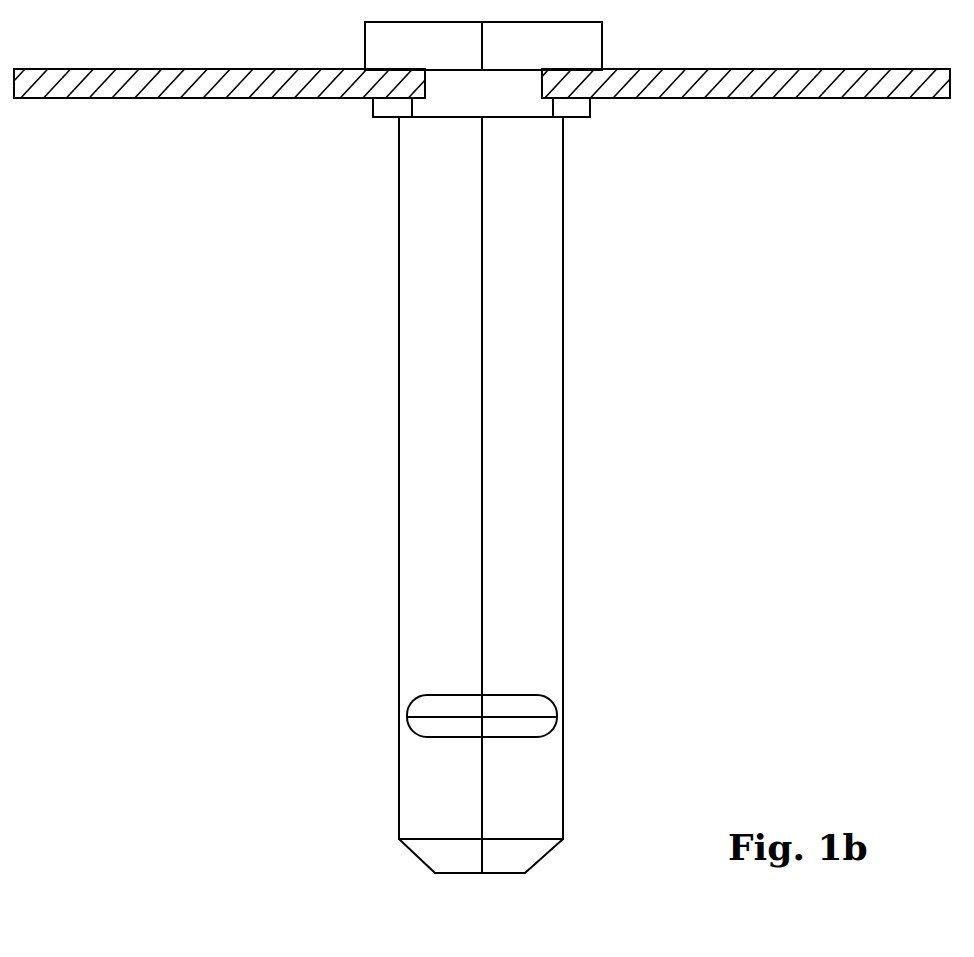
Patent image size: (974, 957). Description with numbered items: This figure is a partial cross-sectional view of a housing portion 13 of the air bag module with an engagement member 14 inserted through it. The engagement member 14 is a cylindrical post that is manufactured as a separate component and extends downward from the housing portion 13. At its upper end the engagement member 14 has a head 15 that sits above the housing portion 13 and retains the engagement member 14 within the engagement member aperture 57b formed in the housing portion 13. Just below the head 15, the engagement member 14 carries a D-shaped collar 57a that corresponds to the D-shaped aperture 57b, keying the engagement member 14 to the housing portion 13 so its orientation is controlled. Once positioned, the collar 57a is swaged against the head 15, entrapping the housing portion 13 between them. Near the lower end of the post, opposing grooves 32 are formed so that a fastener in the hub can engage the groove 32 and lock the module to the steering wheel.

The housing portion 13 is at (632, 100).
The engagement member 14 is at (563, 358).
The head 15 is at (385, 37).
The groove 32 is at (522, 707).
The D-shaped collar 57a is at (570, 108).
The D-shaped aperture 57b is at (395, 98).